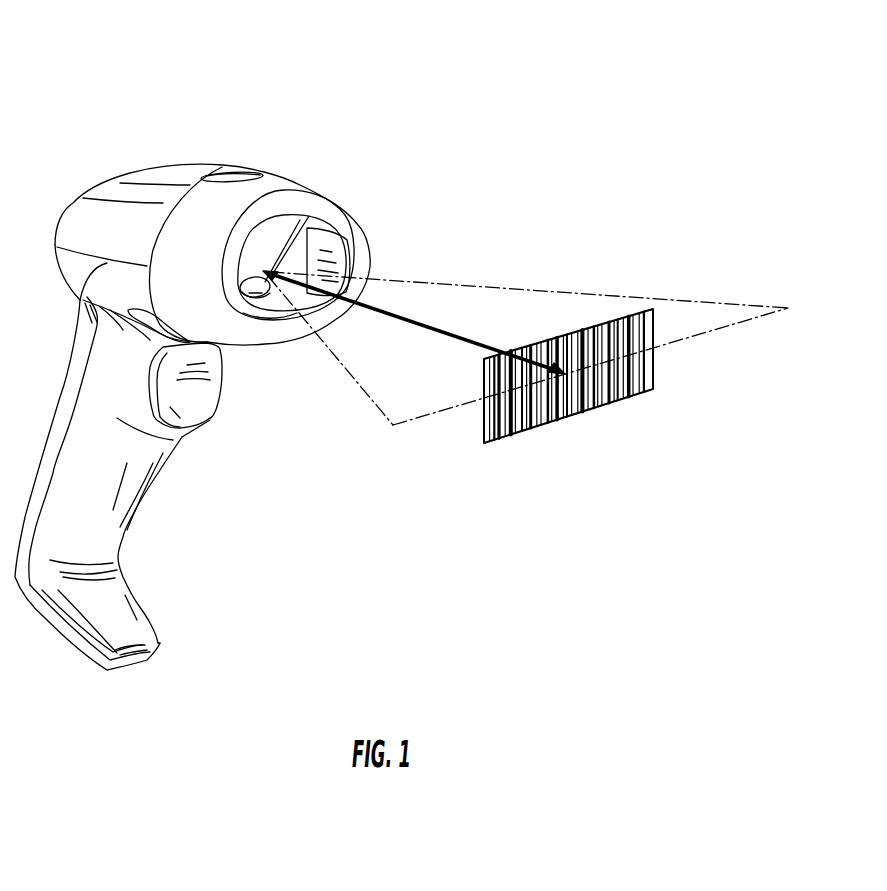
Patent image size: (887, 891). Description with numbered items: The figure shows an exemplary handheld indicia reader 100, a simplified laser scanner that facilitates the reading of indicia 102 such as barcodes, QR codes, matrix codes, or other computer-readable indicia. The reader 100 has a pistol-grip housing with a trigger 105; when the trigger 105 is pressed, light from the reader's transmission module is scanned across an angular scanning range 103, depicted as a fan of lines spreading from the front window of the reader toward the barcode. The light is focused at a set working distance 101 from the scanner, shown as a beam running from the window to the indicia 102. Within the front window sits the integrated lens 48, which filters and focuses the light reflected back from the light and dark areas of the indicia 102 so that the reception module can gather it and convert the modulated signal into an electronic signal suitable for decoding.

The handheld indicia reader 100 is at (158, 136).
The working distance 101 is at (407, 308).
The indicia 102 is at (655, 365).
The scanning range 103 is at (622, 287).
The trigger 105 is at (217, 387).
The integrated lens 48 is at (258, 298).